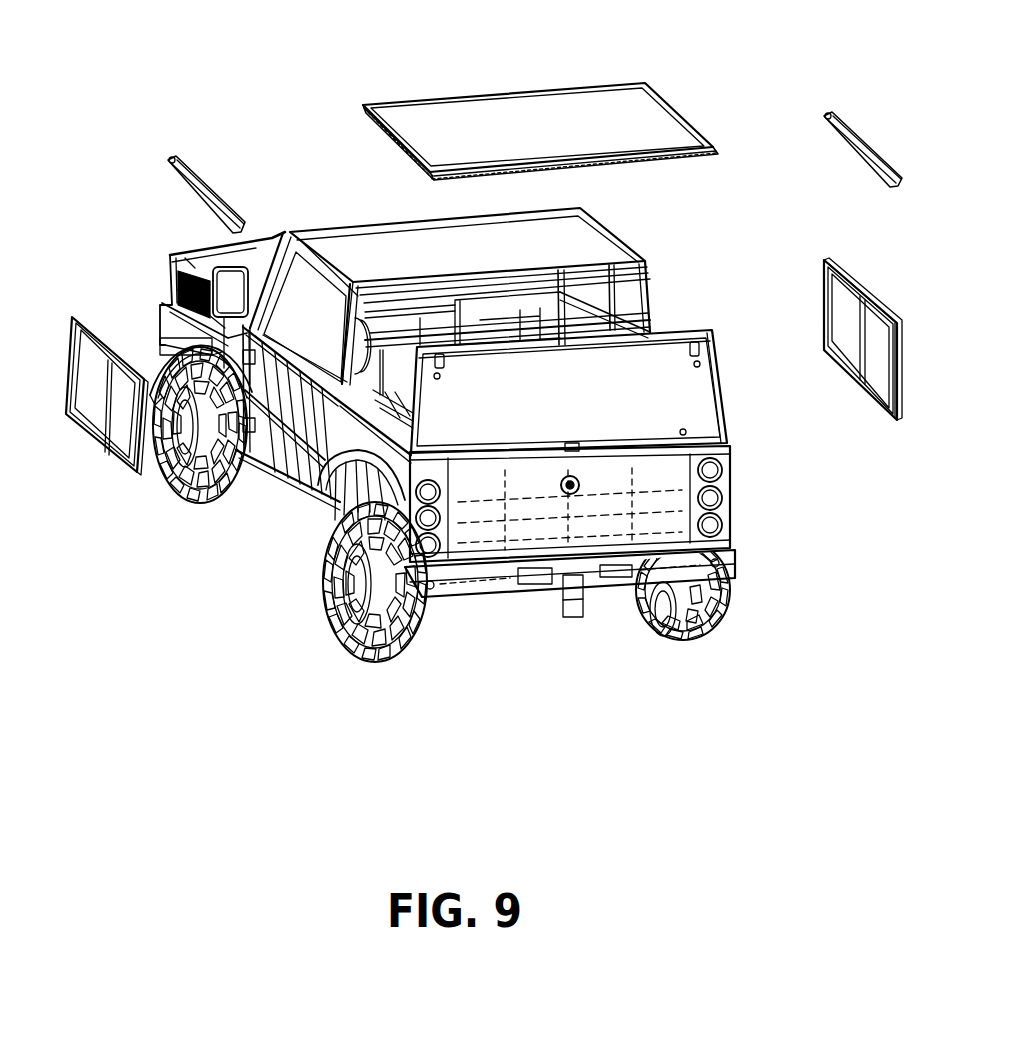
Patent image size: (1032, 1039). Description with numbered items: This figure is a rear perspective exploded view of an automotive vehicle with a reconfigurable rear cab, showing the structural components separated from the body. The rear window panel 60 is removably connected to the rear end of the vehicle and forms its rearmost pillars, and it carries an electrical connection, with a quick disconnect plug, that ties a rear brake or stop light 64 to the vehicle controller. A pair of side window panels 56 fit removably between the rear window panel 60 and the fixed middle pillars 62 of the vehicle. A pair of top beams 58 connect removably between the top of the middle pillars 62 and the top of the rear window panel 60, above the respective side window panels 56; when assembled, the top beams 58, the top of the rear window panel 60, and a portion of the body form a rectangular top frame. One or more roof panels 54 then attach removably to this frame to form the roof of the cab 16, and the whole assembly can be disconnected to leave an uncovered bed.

The cab 16 is at (585, 248).
The roof panel 54 is at (632, 95).
The side window panel 56 is at (112, 425).
The top beam 58 is at (183, 170).
The rear window panel 60 is at (685, 415).
The middle pillar 62 is at (650, 315).
The rear brake or stop light 64 is at (612, 325).